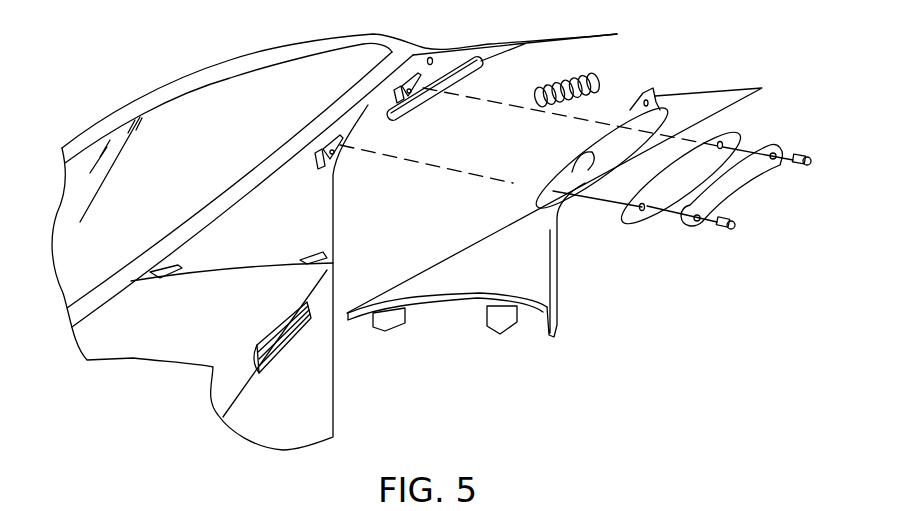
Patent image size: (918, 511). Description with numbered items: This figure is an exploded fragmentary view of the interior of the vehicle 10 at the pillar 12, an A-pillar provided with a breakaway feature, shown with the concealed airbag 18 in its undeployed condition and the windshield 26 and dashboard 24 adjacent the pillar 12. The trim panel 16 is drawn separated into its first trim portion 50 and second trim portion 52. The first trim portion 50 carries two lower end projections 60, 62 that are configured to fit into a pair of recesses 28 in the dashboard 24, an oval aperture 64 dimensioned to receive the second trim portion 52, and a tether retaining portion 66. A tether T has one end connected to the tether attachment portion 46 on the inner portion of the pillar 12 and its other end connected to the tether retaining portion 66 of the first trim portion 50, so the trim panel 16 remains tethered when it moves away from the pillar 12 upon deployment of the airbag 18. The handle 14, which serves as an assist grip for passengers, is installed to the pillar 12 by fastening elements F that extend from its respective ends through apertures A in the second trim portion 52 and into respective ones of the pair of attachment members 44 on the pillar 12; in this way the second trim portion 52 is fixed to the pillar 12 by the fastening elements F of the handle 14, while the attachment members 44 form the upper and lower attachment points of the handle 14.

The vehicle 10 is at (112, 72).
The pillar 12 is at (229, 184).
The handle 14 is at (747, 183).
The trim panel 16 is at (650, 268).
The airbag 18 is at (413, 105).
The dashboard 24 is at (235, 383).
The windshield 26 is at (210, 105).
The recesses 28 is at (307, 253).
The attachment members 44 is at (340, 143).
The tether attachment portion 46 is at (432, 58).
The first trim portion 50 is at (530, 283).
The second trim portion 52 is at (627, 215).
The lower end projection 60 is at (388, 320).
The lower end projection 62 is at (502, 313).
The oval aperture 64 is at (590, 163).
The tether retaining portion 66 is at (655, 90).
The apertures A is at (721, 141).
The fastening elements F is at (803, 153).
The tether T is at (580, 84).